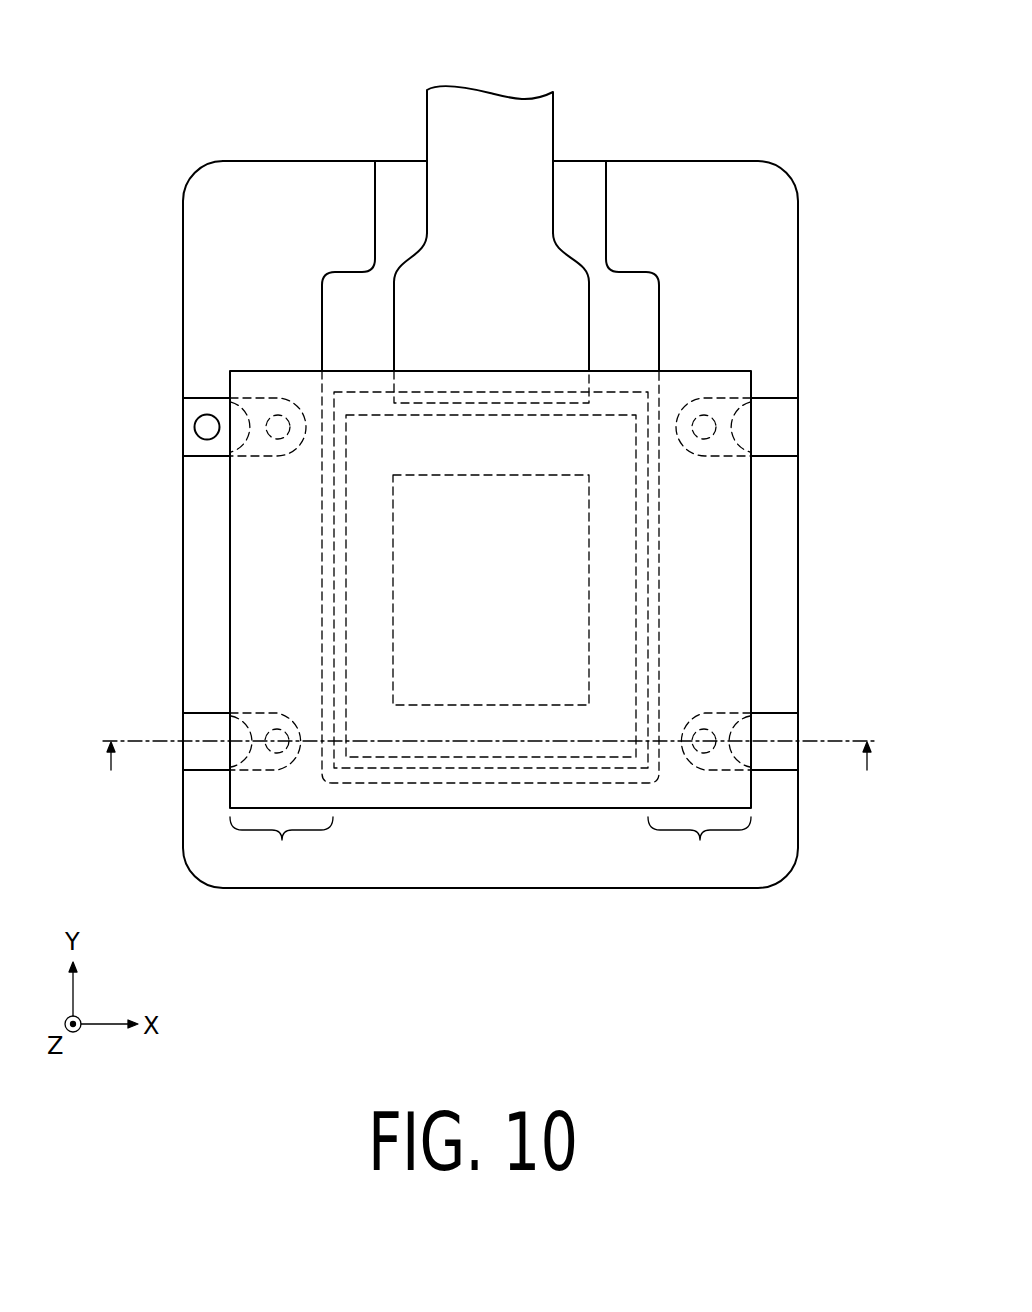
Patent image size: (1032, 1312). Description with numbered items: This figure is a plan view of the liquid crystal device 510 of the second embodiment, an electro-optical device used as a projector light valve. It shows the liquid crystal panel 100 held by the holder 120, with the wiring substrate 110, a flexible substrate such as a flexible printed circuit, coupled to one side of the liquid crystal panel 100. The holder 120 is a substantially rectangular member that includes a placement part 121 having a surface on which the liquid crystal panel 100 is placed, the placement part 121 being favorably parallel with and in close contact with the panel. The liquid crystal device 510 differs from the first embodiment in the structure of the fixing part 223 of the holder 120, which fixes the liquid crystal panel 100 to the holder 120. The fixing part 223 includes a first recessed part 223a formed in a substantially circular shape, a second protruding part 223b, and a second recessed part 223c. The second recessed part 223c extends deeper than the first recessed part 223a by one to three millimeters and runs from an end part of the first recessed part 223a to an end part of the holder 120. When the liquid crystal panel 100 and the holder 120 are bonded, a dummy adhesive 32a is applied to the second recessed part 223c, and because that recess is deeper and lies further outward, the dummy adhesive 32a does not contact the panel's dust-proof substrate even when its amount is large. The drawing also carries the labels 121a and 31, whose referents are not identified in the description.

The liquid crystal device 510 is at (486, 451).
The wiring substrate 110 is at (553, 113).
The liquid crystal panel 100 is at (751, 522).
The holder 120 is at (798, 623).
The placement part 121 is at (282, 558).
The recess 121a is at (312, 428).
The dummy adhesive 32a is at (194, 427).
The fixing part 223 is at (188, 721).
The first recessed part 223a is at (252, 727).
The second protruding part 223b is at (270, 727).
The second recessed part 223c is at (202, 728).
The overlap width 31 is at (490, 847).